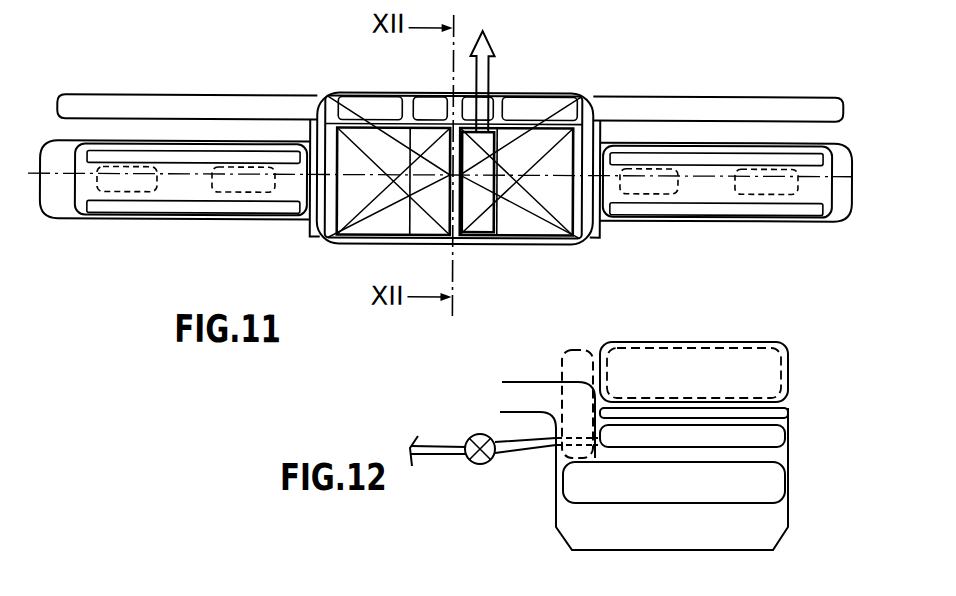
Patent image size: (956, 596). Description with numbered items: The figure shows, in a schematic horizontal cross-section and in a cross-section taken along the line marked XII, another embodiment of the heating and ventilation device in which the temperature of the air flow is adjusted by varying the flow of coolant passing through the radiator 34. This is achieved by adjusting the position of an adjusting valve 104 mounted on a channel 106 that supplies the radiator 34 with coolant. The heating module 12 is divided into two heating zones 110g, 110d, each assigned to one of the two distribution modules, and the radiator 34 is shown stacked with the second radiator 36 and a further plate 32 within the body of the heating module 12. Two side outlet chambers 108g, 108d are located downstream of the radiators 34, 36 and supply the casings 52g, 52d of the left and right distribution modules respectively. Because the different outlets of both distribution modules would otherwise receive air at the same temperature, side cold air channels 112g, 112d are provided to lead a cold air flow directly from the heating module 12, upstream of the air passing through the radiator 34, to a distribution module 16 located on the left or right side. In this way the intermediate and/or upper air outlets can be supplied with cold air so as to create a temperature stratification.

In FIG. 11, the heating module 12 is at (374, 250).
In FIG. 12, the heating module 12 is at (732, 552).
In FIG. 11, the distribution module 16 is at (163, 222).
In FIG. 12, the lower plate 32 is at (762, 485).
In FIG. 12, the heating radiator 34 is at (768, 436).
In FIG. 12, the radiator 36 is at (789, 413).
In FIG. 11, the casing 52g is at (100, 219).
In FIG. 11, the casing 52d is at (790, 222).
In FIG. 12, the adjusting valve 104 is at (478, 464).
In FIG. 12, the channel 106 is at (437, 441).
In FIG. 11, the side outlet chamber 108g is at (312, 208).
In FIG. 11, the side outlet chamber 108d is at (600, 224).
In FIG. 11, the heating zone 110g is at (351, 200).
In FIG. 11, the heating zone 110d is at (556, 200).
In FIG. 11, the side cold air channel 112g is at (142, 107).
In FIG. 12, the side cold air channel 112g is at (564, 363).
In FIG. 11, the side cold air channel 112d is at (712, 108).
In FIG. 12, the side cold air channel 112d is at (535, 391).